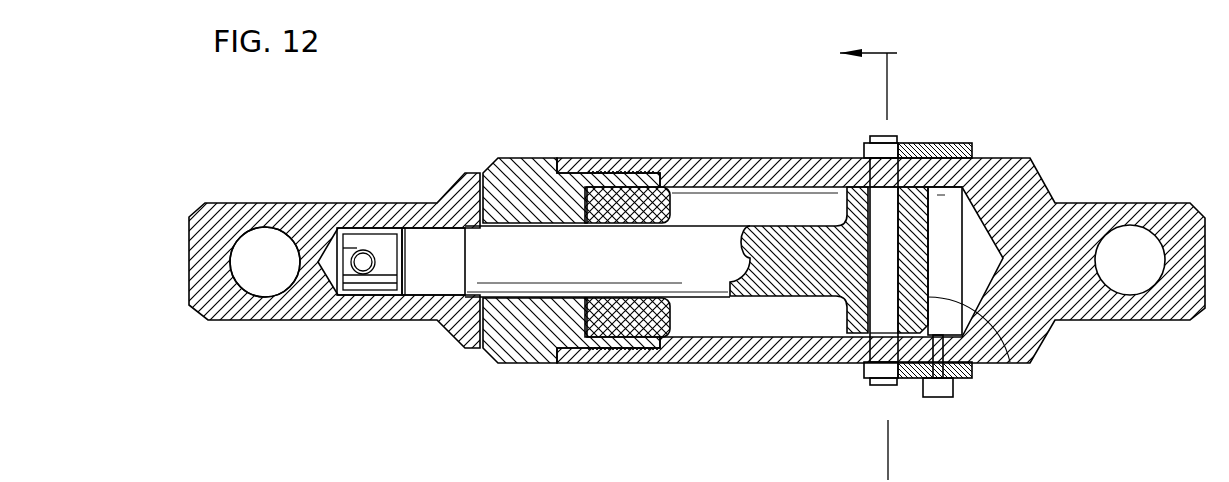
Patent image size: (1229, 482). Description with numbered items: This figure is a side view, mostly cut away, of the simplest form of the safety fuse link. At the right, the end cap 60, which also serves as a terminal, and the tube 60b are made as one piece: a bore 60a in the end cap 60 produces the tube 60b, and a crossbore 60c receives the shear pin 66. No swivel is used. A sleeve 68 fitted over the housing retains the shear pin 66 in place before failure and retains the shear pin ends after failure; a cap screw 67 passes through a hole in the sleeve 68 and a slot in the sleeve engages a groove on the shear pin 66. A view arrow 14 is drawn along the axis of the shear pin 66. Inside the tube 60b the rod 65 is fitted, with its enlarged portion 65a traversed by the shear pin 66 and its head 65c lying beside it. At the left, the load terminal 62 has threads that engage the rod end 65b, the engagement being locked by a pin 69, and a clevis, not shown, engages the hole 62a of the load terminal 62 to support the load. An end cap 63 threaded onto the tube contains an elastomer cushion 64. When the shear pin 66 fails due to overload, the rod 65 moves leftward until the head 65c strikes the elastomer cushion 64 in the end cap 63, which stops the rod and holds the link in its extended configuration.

The section view direction indicator 14 is at (847, 262).
The end cap 60 is at (1093, 203).
The bore 60a is at (1142, 287).
The tube 60b is at (712, 158).
The crossbore 60c is at (860, 350).
The load terminal 62 is at (448, 332).
The hole 62a is at (268, 290).
The end cap 63 is at (537, 363).
The elastomer cushion 64 is at (633, 336).
The rod 65 is at (720, 297).
The piston 65a is at (853, 186).
The rod end 65b is at (428, 243).
The head 65c is at (1010, 362).
The shear pin 66 is at (885, 386).
The cap screw 67 is at (940, 398).
The sleeve 68 is at (923, 143).
The pin 69 is at (362, 250).